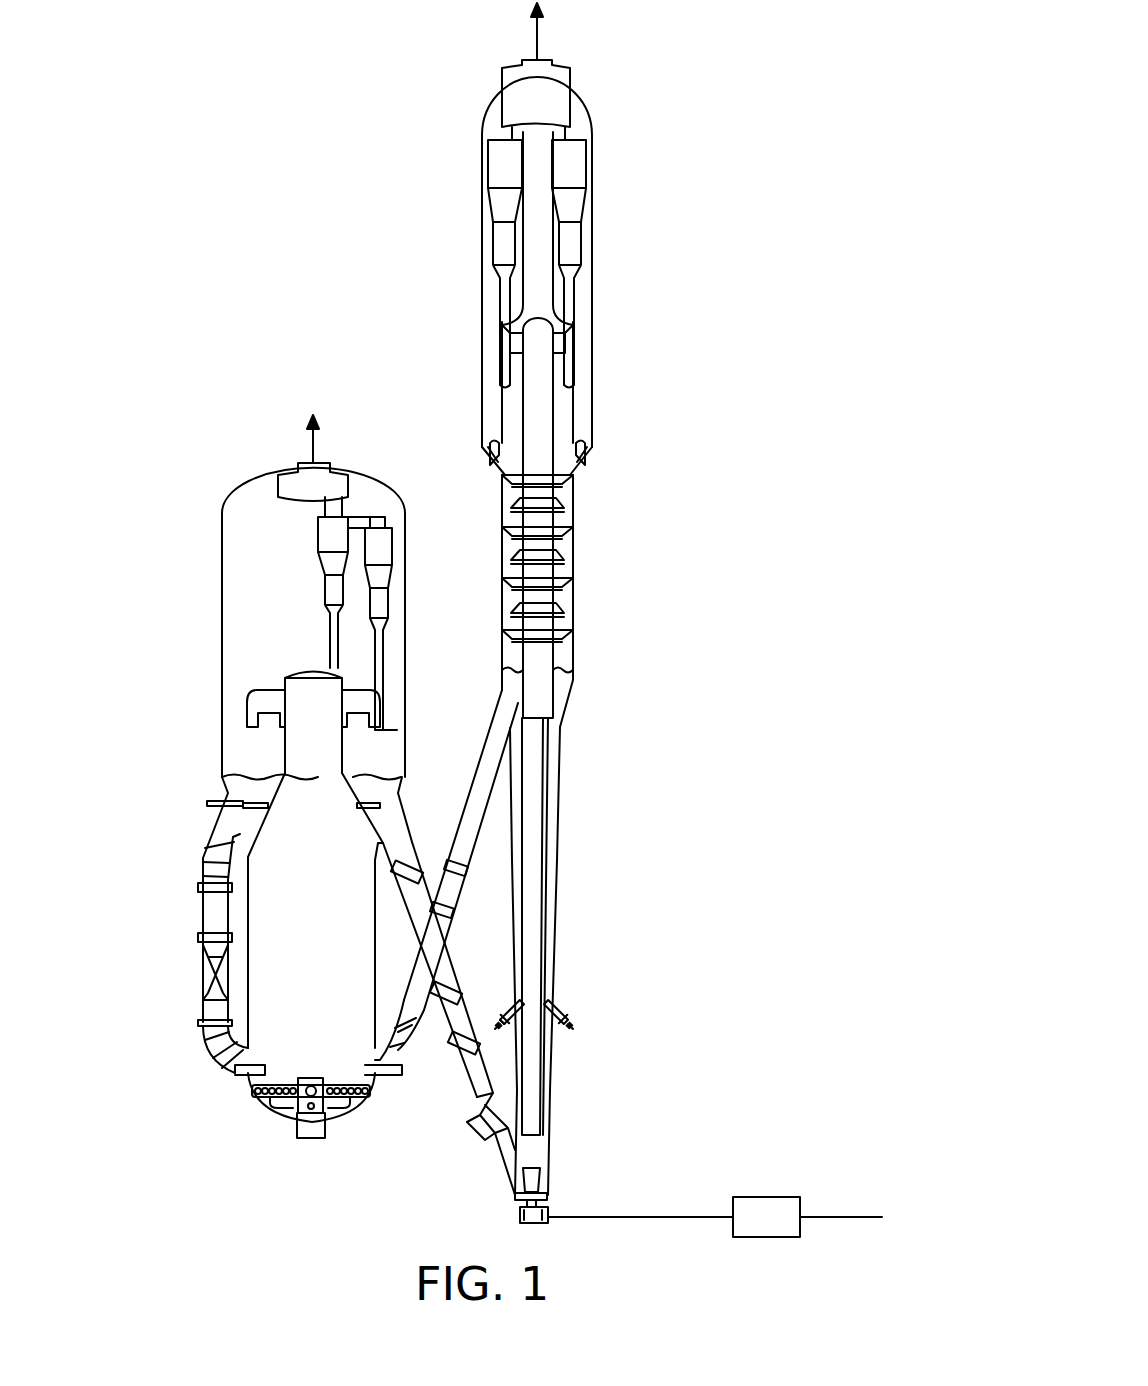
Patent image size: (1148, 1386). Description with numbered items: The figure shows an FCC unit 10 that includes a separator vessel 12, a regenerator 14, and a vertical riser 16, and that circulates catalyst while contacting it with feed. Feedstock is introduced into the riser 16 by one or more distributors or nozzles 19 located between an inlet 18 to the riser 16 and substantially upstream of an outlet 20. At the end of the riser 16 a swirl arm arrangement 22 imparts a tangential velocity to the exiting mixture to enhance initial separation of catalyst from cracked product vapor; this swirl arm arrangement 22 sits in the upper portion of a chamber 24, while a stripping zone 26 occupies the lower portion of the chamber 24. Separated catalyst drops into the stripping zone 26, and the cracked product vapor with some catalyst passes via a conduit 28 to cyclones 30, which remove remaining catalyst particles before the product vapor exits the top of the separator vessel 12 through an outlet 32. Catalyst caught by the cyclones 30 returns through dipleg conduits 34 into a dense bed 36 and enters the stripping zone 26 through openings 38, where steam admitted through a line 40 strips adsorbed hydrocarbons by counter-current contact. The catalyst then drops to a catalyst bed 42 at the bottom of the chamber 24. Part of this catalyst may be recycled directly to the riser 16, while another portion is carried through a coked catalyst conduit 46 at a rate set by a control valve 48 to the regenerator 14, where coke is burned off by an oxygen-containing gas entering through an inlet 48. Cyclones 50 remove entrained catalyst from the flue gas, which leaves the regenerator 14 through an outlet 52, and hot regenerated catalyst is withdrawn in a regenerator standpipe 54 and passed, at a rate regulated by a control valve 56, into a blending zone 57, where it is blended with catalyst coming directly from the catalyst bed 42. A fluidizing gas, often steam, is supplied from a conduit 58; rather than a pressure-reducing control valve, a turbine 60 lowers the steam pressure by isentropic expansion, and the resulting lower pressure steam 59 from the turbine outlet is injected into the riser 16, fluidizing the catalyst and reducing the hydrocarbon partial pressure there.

The FCC unit 10 is at (350, 194).
The separator vessel 12 is at (706, 484).
The regenerator 14 is at (184, 625).
The vertical riser 16 is at (630, 852).
The inlet 18 is at (512, 1160).
The distributors or nozzles 19 is at (516, 1008).
The outlet 20 is at (556, 340).
The swirl arm arrangement 22 is at (513, 330).
The chamber 24 is at (499, 509).
The stripping zone 26 is at (562, 546).
The conduit 28 is at (540, 216).
The cyclones 30 is at (500, 165).
The outlet 32 is at (527, 90).
The dipleg conduits 34 is at (497, 355).
The dense bed 36 is at (488, 447).
The openings 38 is at (487, 462).
The line 40 is at (562, 682).
The catalyst bed 42 is at (564, 698).
The coked catalyst conduit 46 is at (488, 760).
The control valve 48 is at (410, 1013).
The cyclones 50 is at (325, 530).
The outlet 52 is at (300, 482).
The regenerator standpipe 54 is at (445, 968).
The control valve 56 is at (490, 1118).
The blending zone 57 is at (535, 1158).
The conduit 58 is at (848, 1216).
The lower pressure steam 59 is at (665, 1222).
The turbine 60 is at (768, 1196).